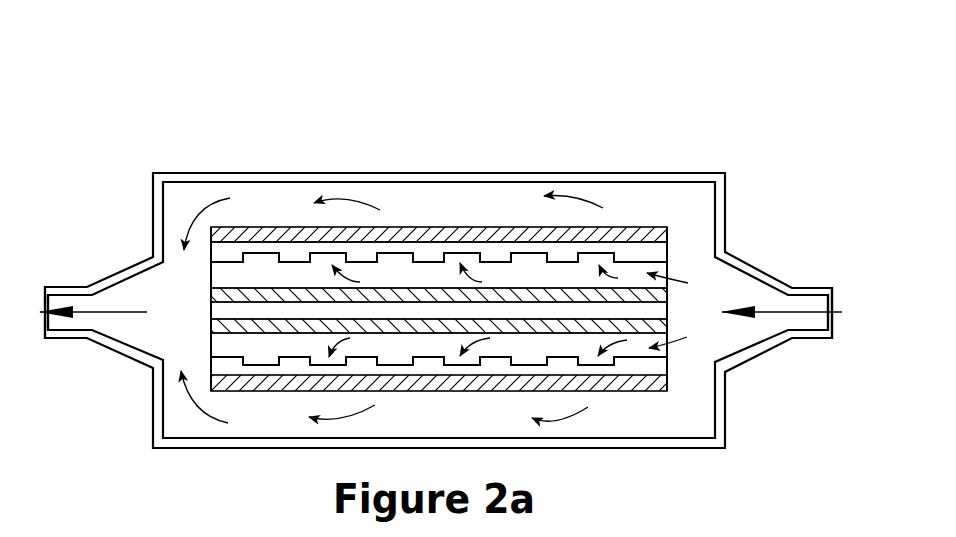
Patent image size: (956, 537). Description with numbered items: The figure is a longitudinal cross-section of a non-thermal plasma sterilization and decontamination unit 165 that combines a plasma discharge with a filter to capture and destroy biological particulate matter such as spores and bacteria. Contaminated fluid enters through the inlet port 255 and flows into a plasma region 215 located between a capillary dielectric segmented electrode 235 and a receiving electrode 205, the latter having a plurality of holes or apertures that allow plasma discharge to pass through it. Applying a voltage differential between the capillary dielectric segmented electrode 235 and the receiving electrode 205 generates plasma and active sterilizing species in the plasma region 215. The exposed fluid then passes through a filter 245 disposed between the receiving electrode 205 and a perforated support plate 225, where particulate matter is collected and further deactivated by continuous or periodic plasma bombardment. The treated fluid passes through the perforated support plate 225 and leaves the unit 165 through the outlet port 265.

The sterilization and decontamination unit 165 is at (203, 89).
The receiving electrode 205 is at (640, 250).
The plasma region 215 is at (667, 262).
The perforated support plate 225 is at (657, 393).
The capillary dielectric segmented electrode 235 is at (209, 322).
The filter 245 is at (427, 221).
The inlet port 255 is at (805, 310).
The outlet port 265 is at (92, 310).